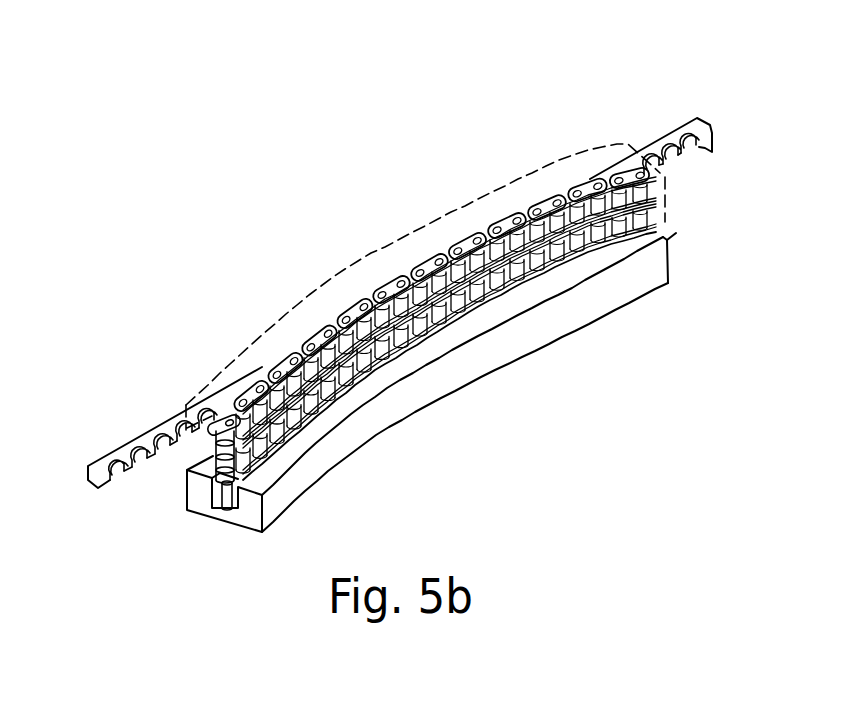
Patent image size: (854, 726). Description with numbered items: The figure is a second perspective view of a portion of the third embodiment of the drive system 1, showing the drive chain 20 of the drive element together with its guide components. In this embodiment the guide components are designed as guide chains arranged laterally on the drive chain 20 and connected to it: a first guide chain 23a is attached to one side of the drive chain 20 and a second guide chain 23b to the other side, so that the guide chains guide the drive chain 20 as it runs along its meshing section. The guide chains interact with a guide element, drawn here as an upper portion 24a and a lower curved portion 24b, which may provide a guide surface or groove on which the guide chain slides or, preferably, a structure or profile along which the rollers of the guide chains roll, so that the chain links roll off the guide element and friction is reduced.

The drive system 1 is at (606, 74).
The drive chain 20 is at (567, 265).
The guide chain 23a is at (223, 420).
The guide chain 23b is at (213, 457).
The guide element 24a is at (397, 257).
The guide element 24b is at (453, 365).